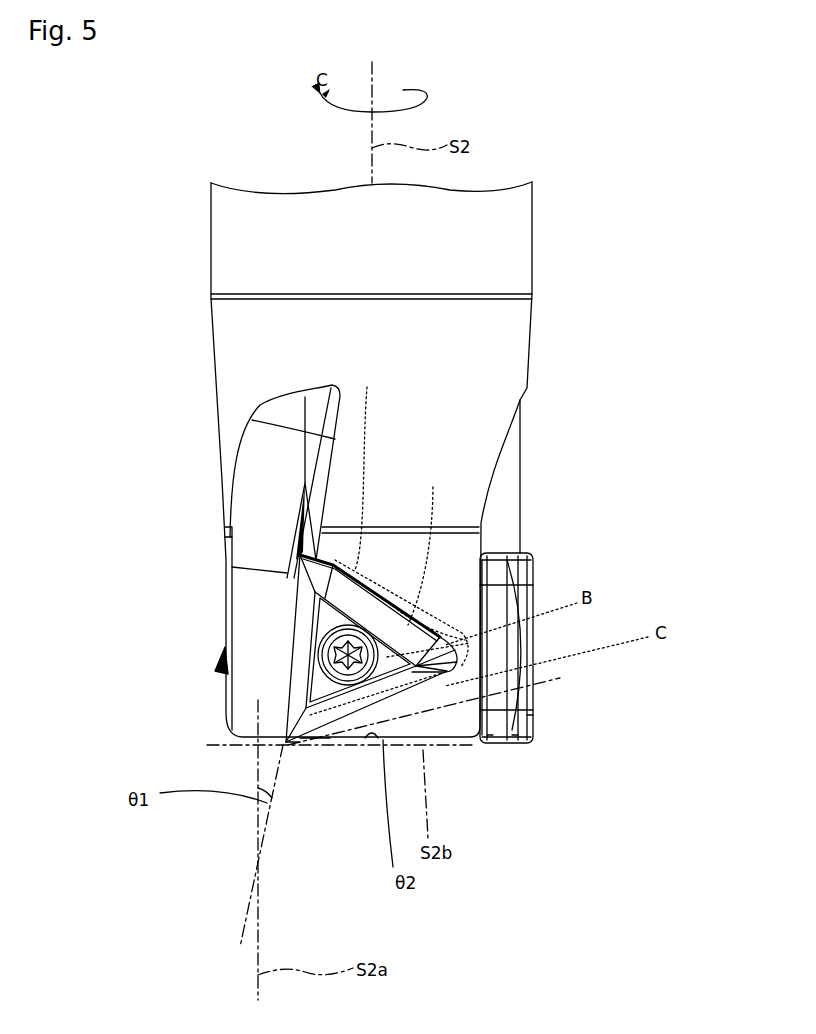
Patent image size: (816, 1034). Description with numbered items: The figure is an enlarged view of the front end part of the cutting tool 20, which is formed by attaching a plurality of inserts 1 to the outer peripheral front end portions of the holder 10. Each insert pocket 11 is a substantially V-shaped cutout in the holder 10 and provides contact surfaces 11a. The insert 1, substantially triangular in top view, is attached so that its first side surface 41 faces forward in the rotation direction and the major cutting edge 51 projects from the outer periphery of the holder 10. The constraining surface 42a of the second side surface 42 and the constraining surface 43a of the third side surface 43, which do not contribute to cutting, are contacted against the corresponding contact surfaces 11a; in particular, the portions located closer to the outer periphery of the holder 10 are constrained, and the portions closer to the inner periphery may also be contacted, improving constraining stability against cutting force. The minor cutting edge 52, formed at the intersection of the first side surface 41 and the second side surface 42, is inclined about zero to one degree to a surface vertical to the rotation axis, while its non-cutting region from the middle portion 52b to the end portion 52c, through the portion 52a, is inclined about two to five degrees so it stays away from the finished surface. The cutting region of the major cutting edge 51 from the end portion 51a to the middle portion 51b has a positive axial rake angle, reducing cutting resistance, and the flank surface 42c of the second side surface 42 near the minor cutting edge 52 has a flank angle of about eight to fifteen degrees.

The insert 1 is at (403, 645).
The holder 10 is at (497, 338).
The insert pocket 11 is at (272, 501).
The contact surface 11a is at (312, 607).
The cutting tool 20 is at (407, 426).
The first side surface 41 is at (320, 648).
The second side surface 42 is at (498, 689).
The constraining surface 42a is at (420, 697).
The flank surface 42c is at (313, 747).
The third side surface 43 is at (371, 584).
The constraining surface 43a is at (385, 610).
The major cutting edge 51 is at (294, 674).
The end portion 51a is at (287, 743).
The middle portion 51b is at (217, 668).
The minor cutting edge 52 is at (287, 753).
The minor cutting edge portion 52a is at (527, 748).
The middle portion 52b is at (515, 750).
The end portion 52c is at (490, 753).